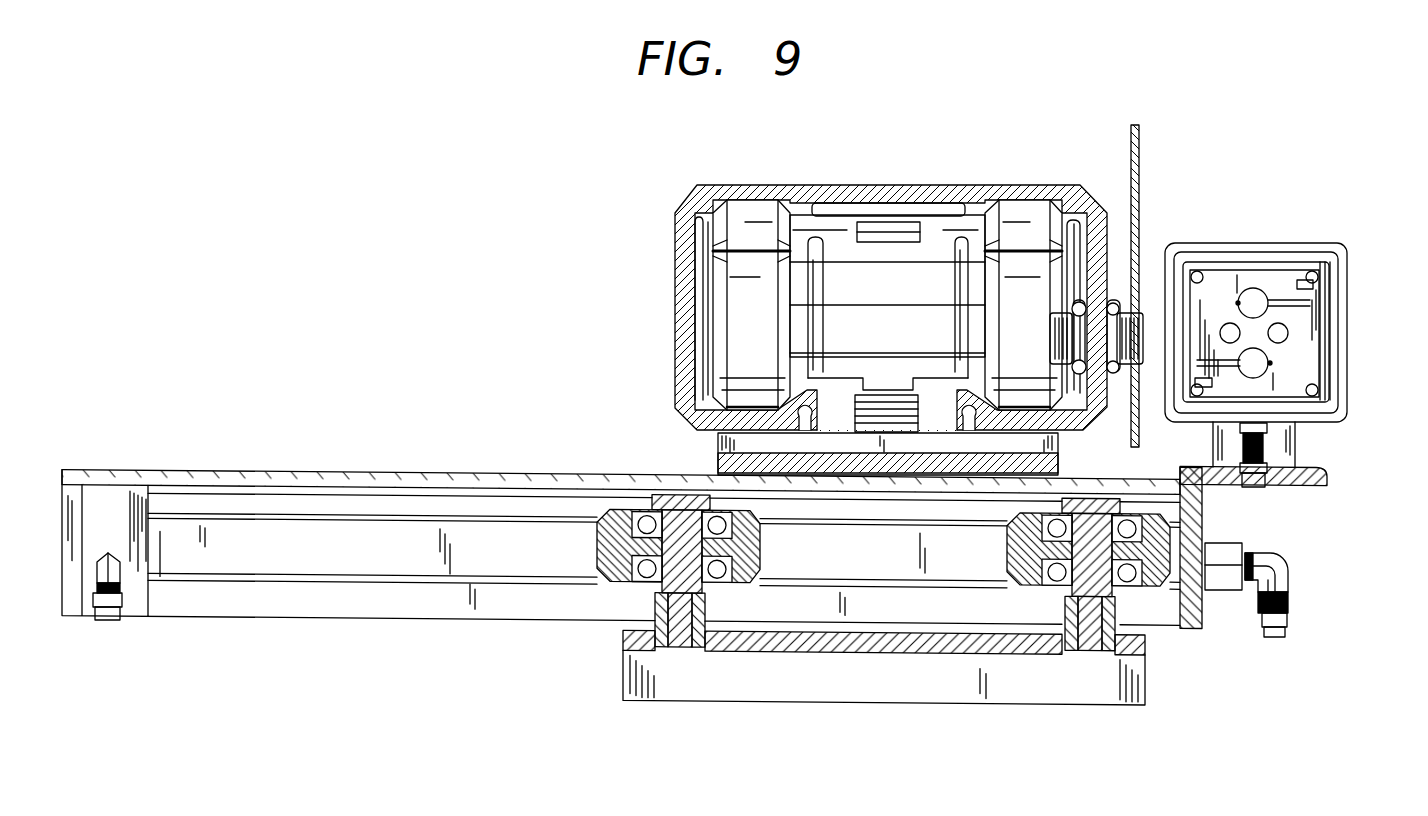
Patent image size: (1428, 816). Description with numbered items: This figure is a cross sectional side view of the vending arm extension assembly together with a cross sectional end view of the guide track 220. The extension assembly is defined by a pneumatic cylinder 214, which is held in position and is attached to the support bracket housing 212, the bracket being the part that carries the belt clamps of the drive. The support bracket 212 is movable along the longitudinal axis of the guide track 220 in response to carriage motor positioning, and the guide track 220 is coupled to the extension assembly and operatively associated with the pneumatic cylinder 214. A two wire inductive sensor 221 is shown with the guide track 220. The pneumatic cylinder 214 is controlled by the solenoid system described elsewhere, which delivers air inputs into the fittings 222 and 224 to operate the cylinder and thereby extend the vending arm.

The support bracket housing 212 is at (657, 694).
The pneumatic cylinder 214 is at (278, 552).
The guide track 220 is at (933, 185).
The 2 wire inductive sensor 221 is at (1140, 278).
The fitting 222 is at (104, 622).
The fitting 224 is at (1288, 578).